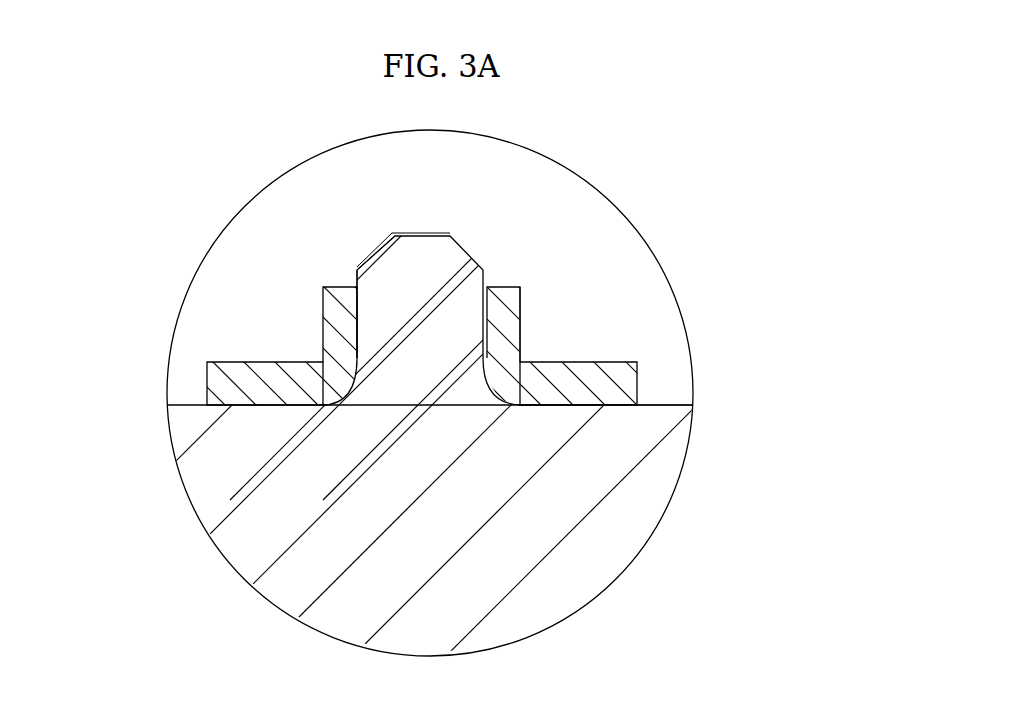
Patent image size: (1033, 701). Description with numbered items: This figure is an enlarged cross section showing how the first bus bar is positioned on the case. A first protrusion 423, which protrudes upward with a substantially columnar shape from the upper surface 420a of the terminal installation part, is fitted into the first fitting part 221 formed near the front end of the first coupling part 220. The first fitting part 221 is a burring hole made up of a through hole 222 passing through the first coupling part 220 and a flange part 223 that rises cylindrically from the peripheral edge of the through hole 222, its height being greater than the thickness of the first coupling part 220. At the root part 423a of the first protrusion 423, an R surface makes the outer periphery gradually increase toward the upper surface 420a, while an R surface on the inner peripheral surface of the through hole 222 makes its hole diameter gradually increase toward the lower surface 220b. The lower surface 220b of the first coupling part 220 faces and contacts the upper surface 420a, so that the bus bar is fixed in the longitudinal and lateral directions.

The first coupling part 220 is at (227, 362).
The lower surface of first coupling part 220b is at (557, 405).
The first fitting part 221 is at (315, 293).
The through hole 222 is at (357, 405).
The flange part 223 is at (320, 333).
The first protrusion 423 is at (480, 263).
The root part of first protrusion 423a is at (493, 378).
The upper surface of terminal installation part 420a is at (692, 405).